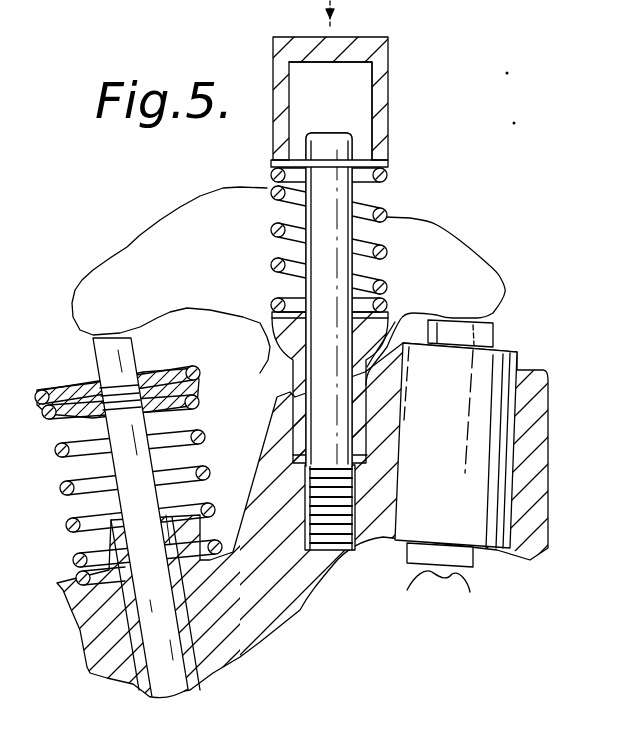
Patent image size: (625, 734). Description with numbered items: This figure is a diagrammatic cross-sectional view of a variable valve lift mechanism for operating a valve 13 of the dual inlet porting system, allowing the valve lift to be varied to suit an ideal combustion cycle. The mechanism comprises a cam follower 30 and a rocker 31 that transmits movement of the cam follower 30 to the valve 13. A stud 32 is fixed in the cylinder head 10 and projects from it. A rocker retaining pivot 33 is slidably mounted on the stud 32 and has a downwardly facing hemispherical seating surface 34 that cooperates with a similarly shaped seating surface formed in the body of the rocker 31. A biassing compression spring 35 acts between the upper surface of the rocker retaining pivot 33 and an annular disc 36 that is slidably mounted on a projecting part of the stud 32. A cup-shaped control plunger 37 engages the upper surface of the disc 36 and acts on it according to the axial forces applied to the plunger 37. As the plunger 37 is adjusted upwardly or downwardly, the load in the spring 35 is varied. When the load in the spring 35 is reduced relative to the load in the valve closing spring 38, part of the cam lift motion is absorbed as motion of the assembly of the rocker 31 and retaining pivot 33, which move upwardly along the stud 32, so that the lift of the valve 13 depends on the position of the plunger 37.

The cylinder head 10 is at (100, 640).
The valve 13 is at (187, 689).
The cam follower 30 is at (460, 460).
The rocker 31 is at (175, 235).
The stud 32 is at (318, 400).
The rocker retaining pivot 33 is at (372, 360).
The hemispherical seating surface 34 is at (373, 340).
The biassing compression spring 35 is at (382, 212).
The annular disc 36 is at (293, 155).
The cup-shaped control plunger 37 is at (380, 103).
The valve closing spring 38 is at (64, 530).